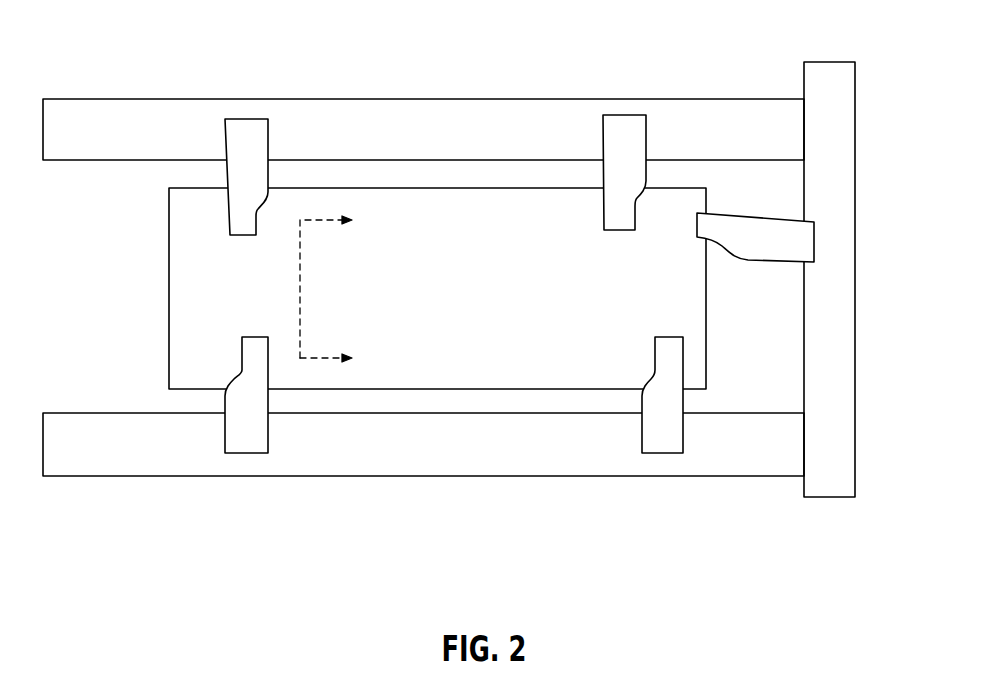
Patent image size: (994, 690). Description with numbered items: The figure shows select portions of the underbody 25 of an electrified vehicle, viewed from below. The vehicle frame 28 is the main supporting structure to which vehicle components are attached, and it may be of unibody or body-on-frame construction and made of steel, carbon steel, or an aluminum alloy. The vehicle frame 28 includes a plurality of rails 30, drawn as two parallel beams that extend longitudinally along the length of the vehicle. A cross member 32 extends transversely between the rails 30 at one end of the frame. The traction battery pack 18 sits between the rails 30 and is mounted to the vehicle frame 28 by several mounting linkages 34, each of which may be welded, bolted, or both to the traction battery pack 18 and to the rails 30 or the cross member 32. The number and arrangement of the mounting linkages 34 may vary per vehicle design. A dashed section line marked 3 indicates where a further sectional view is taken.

The underbody 25 is at (484, 278).
The vehicle frame 28 is at (729, 93).
The rails 30 is at (465, 113).
The cross member 32 is at (844, 332).
The mounting linkages 34 is at (246, 138).
The traction battery pack 18 is at (466, 292).
The section line 3- 3 is at (336, 289).